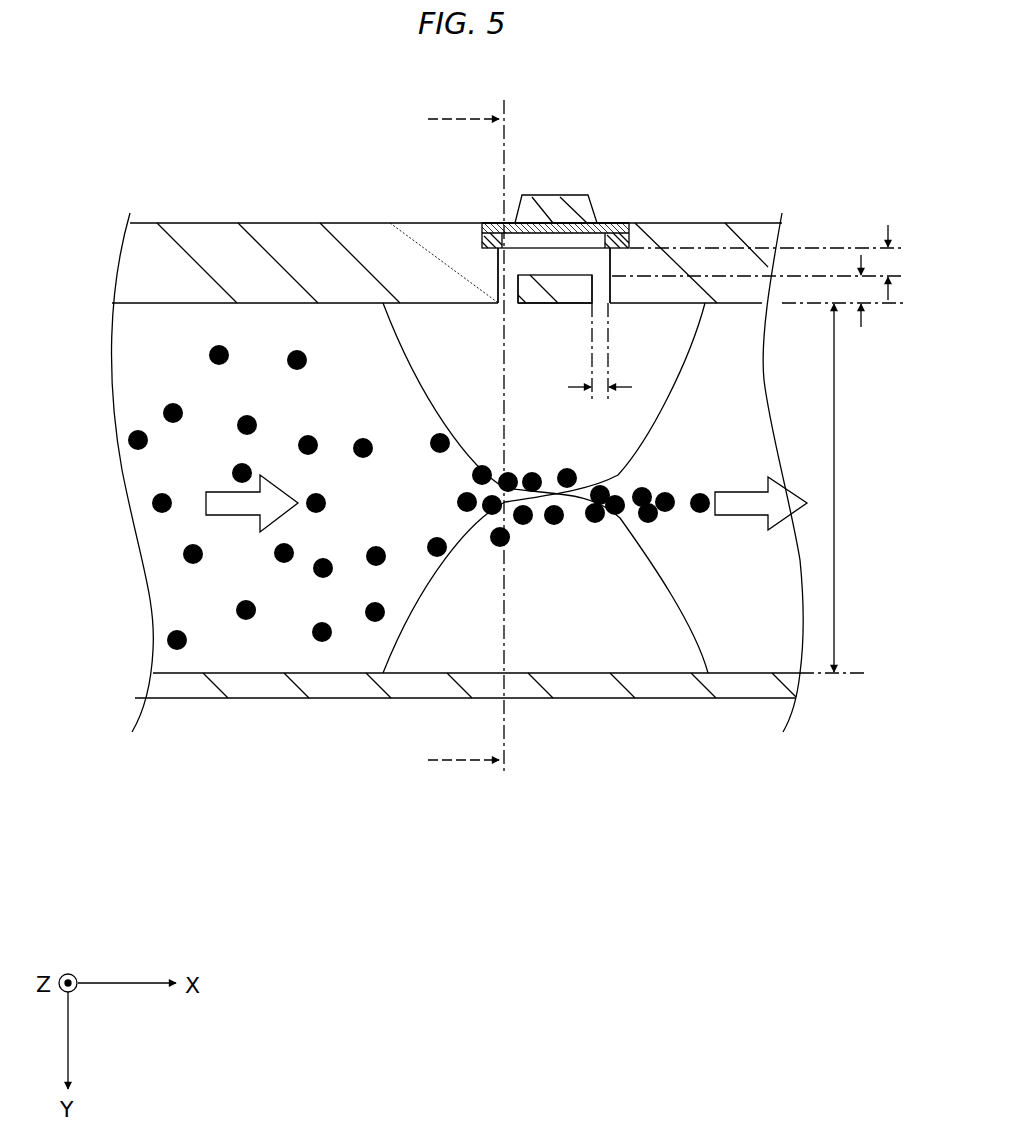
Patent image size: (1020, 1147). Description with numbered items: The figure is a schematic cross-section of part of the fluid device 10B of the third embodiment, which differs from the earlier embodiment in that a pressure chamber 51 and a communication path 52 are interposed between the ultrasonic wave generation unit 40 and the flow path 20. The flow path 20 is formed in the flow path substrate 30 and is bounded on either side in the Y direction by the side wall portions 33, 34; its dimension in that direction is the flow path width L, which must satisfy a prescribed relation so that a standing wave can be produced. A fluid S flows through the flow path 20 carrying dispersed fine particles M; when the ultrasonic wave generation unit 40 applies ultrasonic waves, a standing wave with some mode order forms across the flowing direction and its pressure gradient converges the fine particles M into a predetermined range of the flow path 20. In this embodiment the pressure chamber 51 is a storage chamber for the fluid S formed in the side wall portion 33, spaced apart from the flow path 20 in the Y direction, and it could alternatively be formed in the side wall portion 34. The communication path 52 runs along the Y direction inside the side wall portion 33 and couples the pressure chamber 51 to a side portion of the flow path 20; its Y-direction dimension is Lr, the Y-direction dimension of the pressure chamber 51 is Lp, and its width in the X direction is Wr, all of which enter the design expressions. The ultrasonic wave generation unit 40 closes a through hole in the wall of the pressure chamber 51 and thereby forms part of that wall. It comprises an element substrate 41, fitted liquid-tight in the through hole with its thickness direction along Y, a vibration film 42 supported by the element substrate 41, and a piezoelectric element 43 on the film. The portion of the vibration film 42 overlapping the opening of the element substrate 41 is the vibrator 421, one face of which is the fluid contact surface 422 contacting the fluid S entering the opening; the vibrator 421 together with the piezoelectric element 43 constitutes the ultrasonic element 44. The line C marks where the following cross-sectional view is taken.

The fluid device 10B is at (116, 146).
The flow path 20 is at (290, 305).
The flow path substrate 30 is at (340, 225).
The side wall portion 33 is at (390, 223).
The side wall portion 34 is at (717, 686).
The ultrasonic wave generation unit 40 is at (649, 119).
The element substrate 41 is at (633, 237).
The vibration film 42 is at (617, 223).
The vibrator 421 is at (602, 222).
The fluid contact surface 422 is at (495, 223).
The piezoelectric element 43 is at (557, 200).
The ultrasonic element 44 is at (638, 131).
The pressure chamber 51 is at (605, 255).
The communication path 52 is at (508, 300).
The fluid S is at (185, 312).
The fine particles M is at (165, 408).
The line C- C is at (466, 431).
The flow path width L is at (844, 488).
The dimension of the pressure chamber Lp is at (899, 276).
The dimension of the communication path Lr is at (864, 307).
The width of the communication path Wr is at (600, 408).